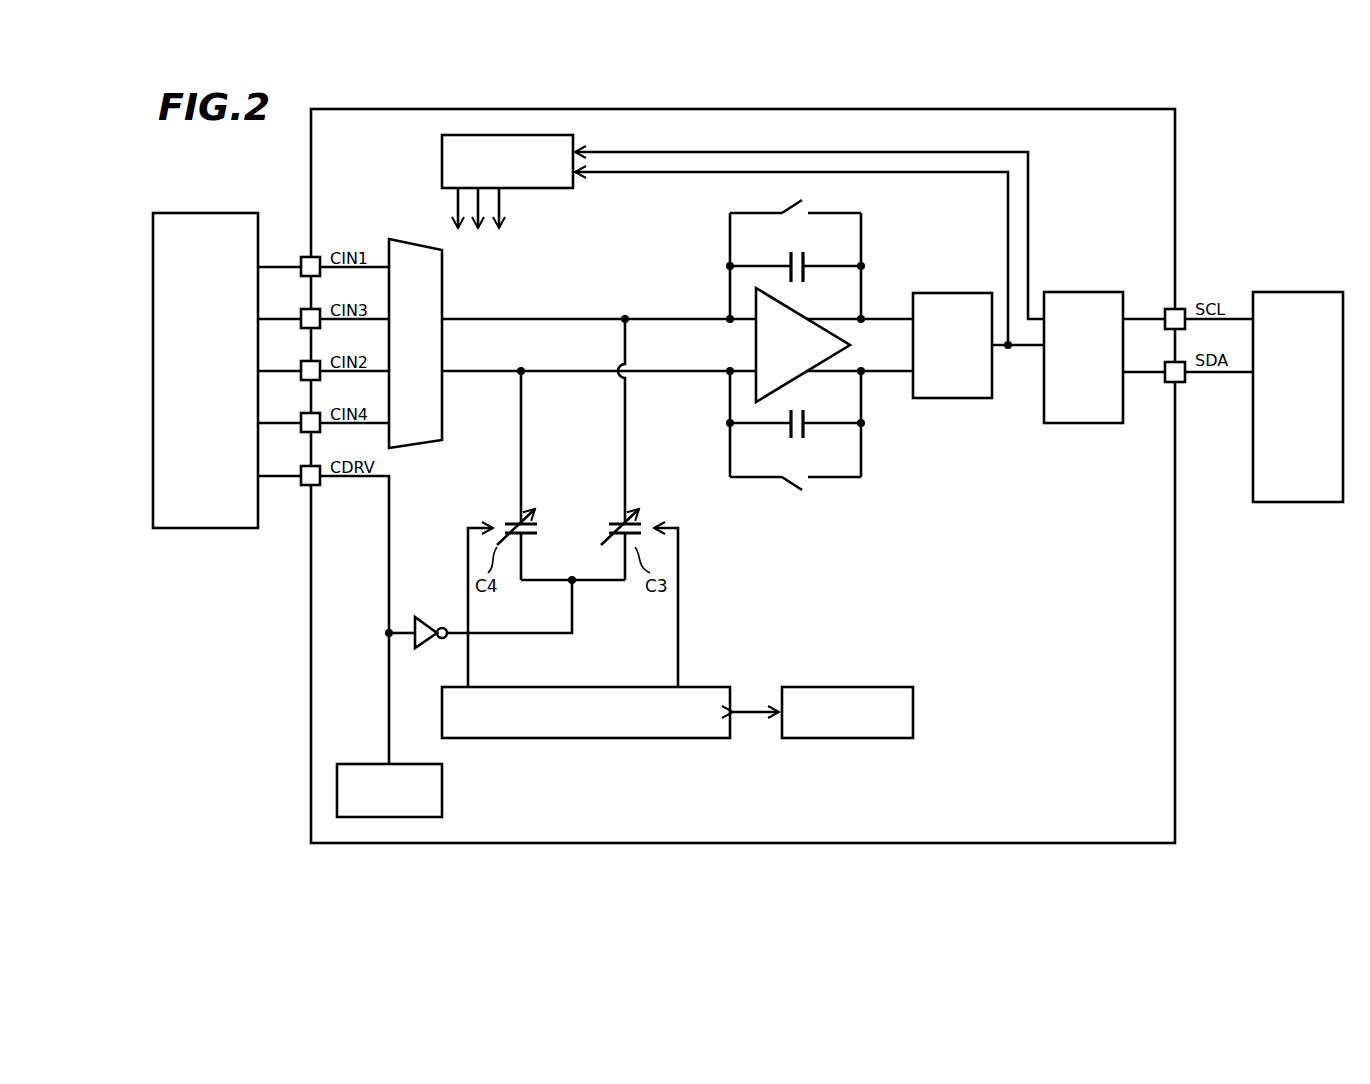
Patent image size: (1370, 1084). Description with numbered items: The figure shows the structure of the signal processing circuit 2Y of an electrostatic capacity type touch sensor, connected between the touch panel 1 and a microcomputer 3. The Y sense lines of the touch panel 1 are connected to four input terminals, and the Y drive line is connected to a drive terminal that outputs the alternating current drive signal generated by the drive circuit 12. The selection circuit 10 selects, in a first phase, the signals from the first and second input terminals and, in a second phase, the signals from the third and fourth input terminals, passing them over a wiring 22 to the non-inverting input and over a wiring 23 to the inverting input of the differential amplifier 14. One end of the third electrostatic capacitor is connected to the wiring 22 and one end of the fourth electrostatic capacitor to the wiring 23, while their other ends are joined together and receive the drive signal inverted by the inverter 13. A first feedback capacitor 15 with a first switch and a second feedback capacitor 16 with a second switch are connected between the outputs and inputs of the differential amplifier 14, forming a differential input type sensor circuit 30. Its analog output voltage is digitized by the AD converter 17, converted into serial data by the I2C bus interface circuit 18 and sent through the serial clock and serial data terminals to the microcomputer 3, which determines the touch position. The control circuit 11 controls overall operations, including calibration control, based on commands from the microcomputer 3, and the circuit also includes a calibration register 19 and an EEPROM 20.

The touch panel 1 is at (192, 222).
The signal processing circuit 2Y is at (753, 106).
The microcomputer 3 is at (1286, 296).
The selection circuit 10 is at (437, 287).
The control circuit 11 is at (537, 186).
The drive circuit 12 is at (442, 797).
The inverter 13 is at (429, 617).
The differential amplifier 14 is at (800, 314).
The first feedback capacitor 15 is at (838, 256).
The second feedback capacitor 16 is at (838, 441).
The AD converter 17 is at (953, 295).
The I2C bus interface circuit 18 is at (1084, 296).
The calibration register 19 is at (630, 739).
The EEPROM 20 is at (848, 739).
The wiring 22 is at (568, 318).
The wiring 23 is at (596, 371).
The sensor circuit 30 is at (693, 236).